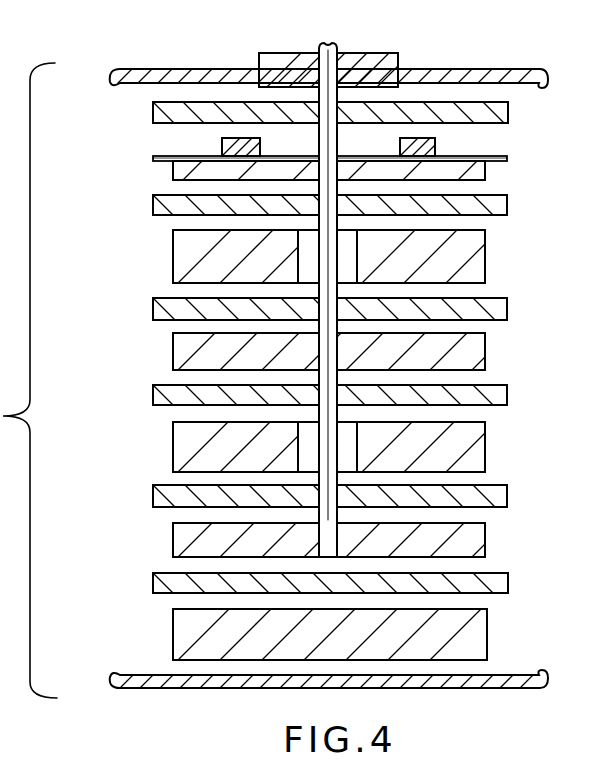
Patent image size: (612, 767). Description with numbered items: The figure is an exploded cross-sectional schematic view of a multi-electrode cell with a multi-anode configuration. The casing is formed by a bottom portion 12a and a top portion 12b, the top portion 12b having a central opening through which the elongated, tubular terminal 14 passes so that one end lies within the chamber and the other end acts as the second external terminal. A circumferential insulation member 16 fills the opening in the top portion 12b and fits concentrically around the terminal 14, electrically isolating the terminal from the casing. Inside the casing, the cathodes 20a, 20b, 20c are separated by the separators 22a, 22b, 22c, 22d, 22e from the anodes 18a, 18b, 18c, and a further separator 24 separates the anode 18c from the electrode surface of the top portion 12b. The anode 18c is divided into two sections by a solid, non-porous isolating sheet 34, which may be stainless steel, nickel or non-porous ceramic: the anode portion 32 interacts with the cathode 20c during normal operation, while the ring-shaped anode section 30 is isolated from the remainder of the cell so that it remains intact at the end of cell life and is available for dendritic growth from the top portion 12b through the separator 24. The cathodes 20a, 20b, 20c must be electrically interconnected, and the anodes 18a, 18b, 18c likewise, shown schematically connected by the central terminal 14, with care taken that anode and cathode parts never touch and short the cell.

The bottom portion 12a is at (135, 686).
The top portion 12b is at (528, 70).
The terminal 14 is at (340, 62).
The insulation member 16 is at (313, 68).
The anode 18a is at (487, 543).
The anode 18b is at (487, 356).
The anode 18c is at (153, 159).
The cathode 20a is at (487, 635).
The cathode 20b is at (487, 452).
The cathode 20c is at (487, 260).
The separator 22a is at (153, 582).
The separator 22b is at (153, 494).
The separator 22c is at (153, 392).
The separator 22d is at (153, 306).
The separator 22e is at (153, 205).
The separator 24 is at (153, 110).
The anode section 30 is at (437, 150).
The anode portion 32 is at (485, 176).
The isolating sheet 34 is at (507, 158).